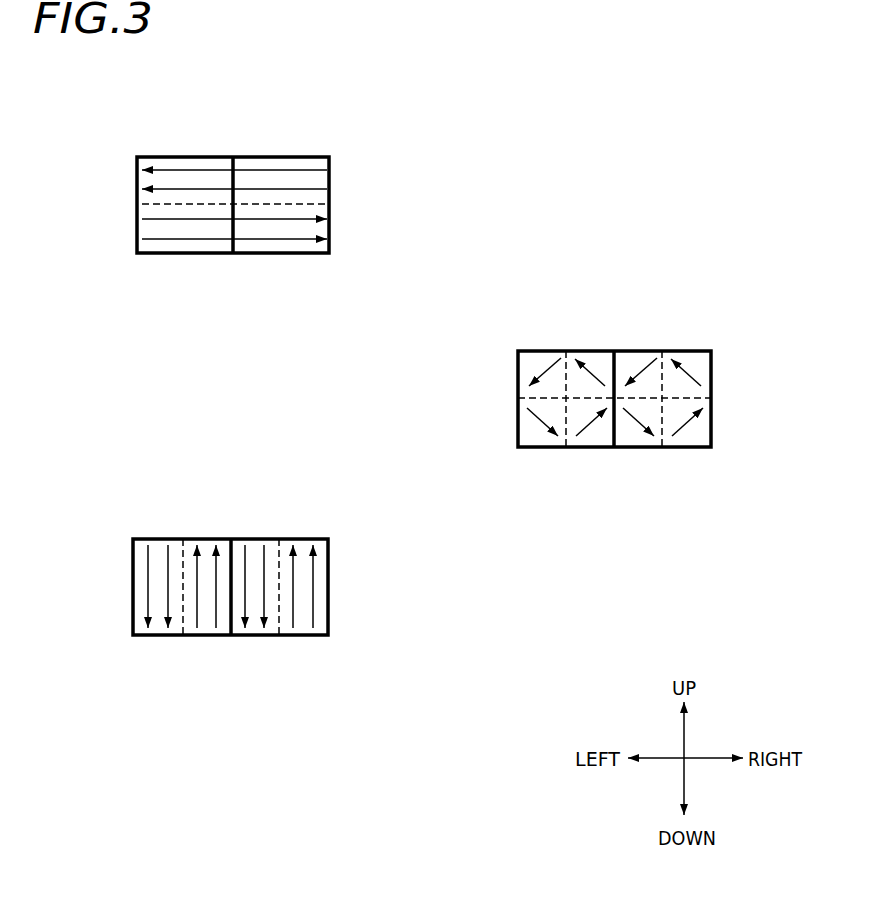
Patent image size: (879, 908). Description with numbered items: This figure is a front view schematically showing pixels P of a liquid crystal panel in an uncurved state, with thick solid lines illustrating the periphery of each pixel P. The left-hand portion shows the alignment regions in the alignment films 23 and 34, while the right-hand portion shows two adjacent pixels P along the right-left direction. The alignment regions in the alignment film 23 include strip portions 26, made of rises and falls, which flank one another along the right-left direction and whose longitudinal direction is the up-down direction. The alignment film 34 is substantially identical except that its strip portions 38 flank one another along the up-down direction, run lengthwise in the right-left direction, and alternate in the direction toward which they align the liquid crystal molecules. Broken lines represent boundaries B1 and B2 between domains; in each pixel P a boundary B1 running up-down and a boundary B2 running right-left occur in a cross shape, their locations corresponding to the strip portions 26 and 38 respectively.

The alignment film 34 is at (314, 134).
The strip portions 38 is at (287, 188).
The alignment film 23 is at (312, 518).
The strip portions 26 is at (261, 560).
The pixel P is at (137, 228).
The boundary B1 is at (564, 352).
The boundary B2 is at (137, 207).